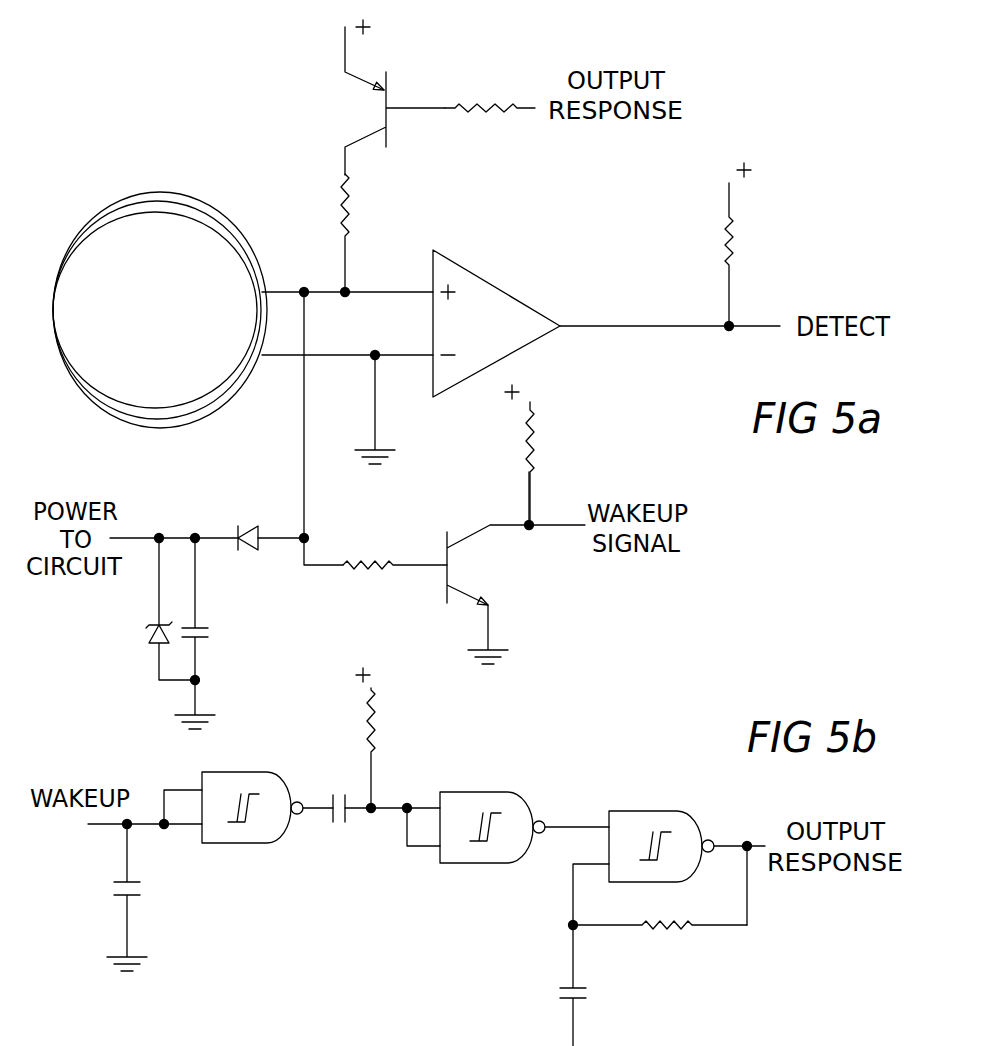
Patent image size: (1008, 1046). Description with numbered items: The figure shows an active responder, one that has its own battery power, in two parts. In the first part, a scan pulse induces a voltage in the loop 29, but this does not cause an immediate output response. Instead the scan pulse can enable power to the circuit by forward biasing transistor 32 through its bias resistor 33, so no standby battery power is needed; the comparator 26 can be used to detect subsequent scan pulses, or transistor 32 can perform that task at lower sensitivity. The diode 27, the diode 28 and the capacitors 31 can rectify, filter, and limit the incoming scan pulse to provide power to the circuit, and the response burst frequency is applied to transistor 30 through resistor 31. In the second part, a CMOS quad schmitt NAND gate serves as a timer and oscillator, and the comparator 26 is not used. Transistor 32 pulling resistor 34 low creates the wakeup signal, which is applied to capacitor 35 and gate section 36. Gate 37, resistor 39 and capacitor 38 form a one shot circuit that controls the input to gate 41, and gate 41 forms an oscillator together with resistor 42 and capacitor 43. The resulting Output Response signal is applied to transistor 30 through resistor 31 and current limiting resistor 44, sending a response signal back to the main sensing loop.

In FIG. 5A, the comparator 26 is at (515, 295).
In FIG. 5A, the diode 27 is at (243, 512).
In FIG. 5A, the diode 28 is at (142, 634).
In FIG. 5A, the loop 29 is at (200, 202).
In FIG. 5A, the transistor 30 is at (367, 98).
In FIG. 5A, the resistor; capacitor 31 is at (477, 100).
In FIG. 5A, the transistor 32 is at (463, 580).
In FIG. 5A, the bias resistor 33 is at (362, 577).
In FIG. 5A, the resistor 34 is at (540, 440).
In FIG. 5B, the capacitor 35 is at (114, 888).
In FIG. 5B, the gate section 36 is at (230, 845).
In FIG. 5B, the gate 37 is at (465, 865).
In FIG. 5B, the capacitor 38 is at (342, 793).
In FIG. 5B, the resistor 39 is at (385, 723).
In FIG. 5B, the gate 41 is at (638, 808).
In FIG. 5B, the resistor 42 is at (663, 937).
In FIG. 5B, the capacitor 43 is at (558, 992).
In FIG. 5A, the current limiting resistor 44 is at (360, 202).